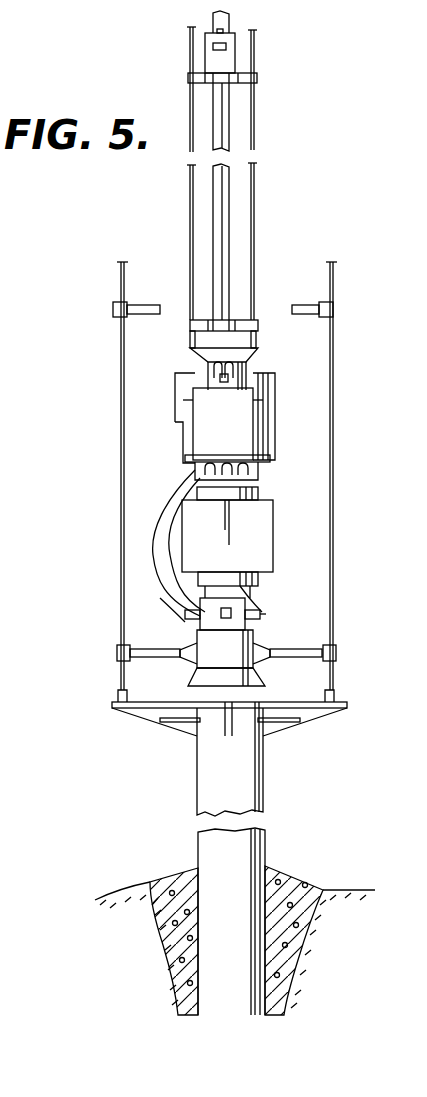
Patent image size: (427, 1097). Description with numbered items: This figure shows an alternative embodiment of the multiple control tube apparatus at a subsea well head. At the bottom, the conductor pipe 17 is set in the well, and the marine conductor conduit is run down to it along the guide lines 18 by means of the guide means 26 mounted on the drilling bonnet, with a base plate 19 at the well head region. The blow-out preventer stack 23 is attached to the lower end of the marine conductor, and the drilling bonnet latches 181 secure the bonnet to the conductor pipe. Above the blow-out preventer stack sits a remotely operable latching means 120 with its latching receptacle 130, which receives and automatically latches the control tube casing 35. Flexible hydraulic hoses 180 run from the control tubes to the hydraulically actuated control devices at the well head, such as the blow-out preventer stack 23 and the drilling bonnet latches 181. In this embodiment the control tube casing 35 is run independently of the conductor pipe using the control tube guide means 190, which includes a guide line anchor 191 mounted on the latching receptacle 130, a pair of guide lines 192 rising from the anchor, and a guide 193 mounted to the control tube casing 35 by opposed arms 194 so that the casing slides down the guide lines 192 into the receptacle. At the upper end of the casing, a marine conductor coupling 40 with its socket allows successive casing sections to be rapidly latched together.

The conductor pipe 17 is at (256, 854).
The guide lines 18 is at (334, 484).
The base plate 19 is at (326, 711).
The blow-out preventer stack 23 is at (209, 511).
The guide means 26 is at (337, 654).
The control tube casing 35 is at (228, 236).
The marine conductor coupling 40 is at (228, 60).
The latching means 120 is at (179, 438).
The latching receptacle 130 is at (246, 366).
The flexible hydraulic hoses 180 is at (160, 598).
The drilling bonnet latches 181 is at (267, 620).
The control tube guide means 190 is at (231, 202).
The guide line anchor 191 is at (195, 358).
The guide lines 192 is at (255, 172).
The guide 193 is at (190, 77).
The opposed arms 194 is at (205, 320).